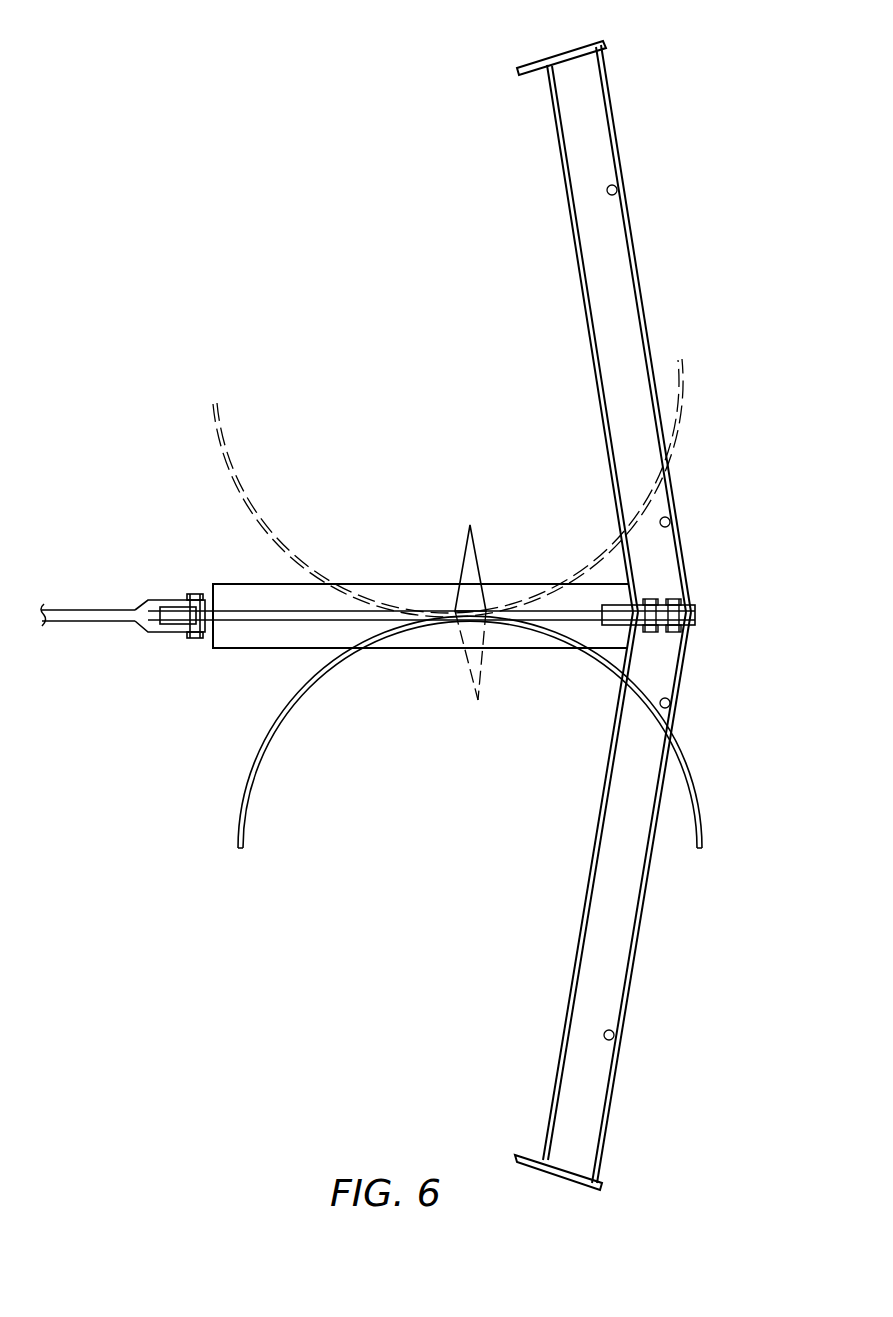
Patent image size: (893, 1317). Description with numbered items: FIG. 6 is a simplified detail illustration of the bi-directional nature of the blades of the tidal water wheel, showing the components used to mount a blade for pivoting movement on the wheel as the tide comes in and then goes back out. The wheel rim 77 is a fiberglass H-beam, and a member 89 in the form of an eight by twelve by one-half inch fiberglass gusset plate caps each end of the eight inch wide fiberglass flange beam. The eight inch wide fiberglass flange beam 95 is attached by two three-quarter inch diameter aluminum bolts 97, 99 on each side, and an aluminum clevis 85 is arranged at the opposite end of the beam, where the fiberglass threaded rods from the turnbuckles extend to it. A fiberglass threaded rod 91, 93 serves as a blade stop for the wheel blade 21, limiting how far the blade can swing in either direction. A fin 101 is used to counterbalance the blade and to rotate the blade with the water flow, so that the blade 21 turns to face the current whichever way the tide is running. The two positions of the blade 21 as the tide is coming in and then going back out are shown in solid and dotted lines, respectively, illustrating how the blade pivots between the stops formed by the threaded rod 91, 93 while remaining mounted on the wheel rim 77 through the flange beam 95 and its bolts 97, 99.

The wheel blade 21 is at (268, 732).
The wheel rim 77 is at (640, 256).
The aluminum clevis 85 is at (162, 600).
The gusset plate 89 is at (568, 60).
The fiberglass threaded rod 91 is at (670, 521).
The fiberglass threaded rod 93 is at (670, 701).
The fiberglass flange beam 95 is at (416, 584).
The aluminum bolt 97 is at (658, 600).
The aluminum bolt 99 is at (676, 633).
The fin 101 is at (480, 572).